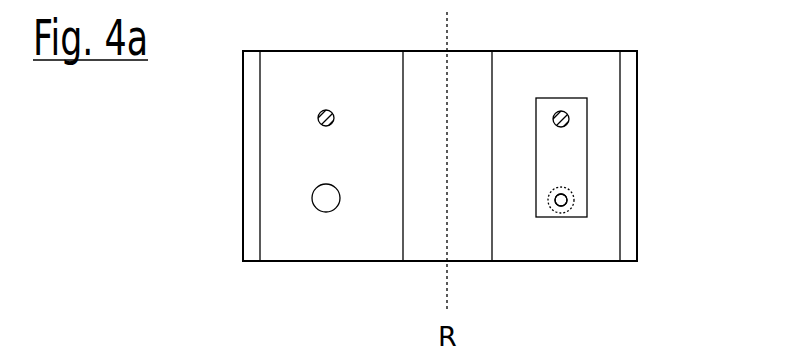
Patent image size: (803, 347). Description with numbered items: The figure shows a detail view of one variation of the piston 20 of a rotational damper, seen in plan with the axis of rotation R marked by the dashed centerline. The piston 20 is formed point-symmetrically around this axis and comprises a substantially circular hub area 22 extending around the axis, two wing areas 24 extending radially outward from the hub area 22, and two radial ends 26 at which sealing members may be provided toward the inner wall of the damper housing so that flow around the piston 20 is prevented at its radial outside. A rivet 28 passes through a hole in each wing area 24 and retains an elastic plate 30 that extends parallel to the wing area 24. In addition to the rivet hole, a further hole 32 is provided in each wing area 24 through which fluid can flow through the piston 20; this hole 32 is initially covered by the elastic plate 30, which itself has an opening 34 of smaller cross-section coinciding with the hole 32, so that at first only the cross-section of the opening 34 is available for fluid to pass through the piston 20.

The piston 20 is at (647, 92).
The hub area 22 is at (414, 262).
The wing area 24 is at (338, 262).
The radial end 26 is at (254, 262).
The rivet 28 is at (318, 118).
The elastic plate 30 is at (583, 155).
The hole 32 is at (312, 199).
The opening 34 is at (562, 207).